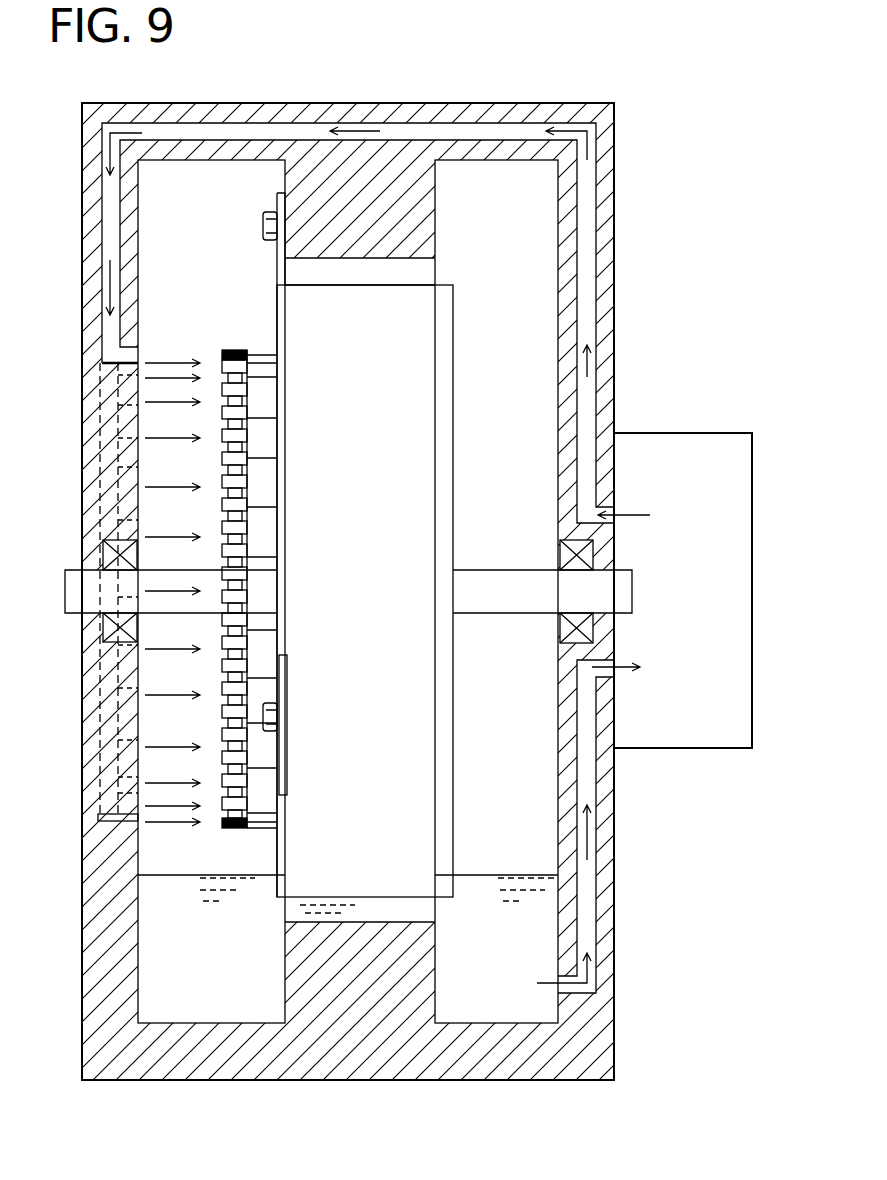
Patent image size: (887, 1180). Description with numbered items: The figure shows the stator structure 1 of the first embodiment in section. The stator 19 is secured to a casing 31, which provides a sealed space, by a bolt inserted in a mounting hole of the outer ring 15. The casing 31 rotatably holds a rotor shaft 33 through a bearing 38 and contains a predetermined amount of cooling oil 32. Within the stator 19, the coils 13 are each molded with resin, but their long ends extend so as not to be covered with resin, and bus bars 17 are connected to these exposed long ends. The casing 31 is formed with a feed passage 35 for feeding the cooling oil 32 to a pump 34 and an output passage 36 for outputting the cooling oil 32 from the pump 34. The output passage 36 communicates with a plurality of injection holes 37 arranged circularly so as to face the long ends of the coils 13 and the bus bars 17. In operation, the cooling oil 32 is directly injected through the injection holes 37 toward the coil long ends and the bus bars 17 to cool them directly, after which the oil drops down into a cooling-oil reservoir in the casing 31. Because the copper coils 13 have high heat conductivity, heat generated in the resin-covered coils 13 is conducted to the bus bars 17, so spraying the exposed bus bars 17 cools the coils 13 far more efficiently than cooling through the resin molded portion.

The stator structure 1 is at (627, 76).
The coil 13 is at (226, 356).
The outer ring 15 is at (430, 332).
The bus bar 17 is at (223, 413).
The stator 19 is at (472, 241).
The casing 31 is at (88, 990).
The cooling oil 32 is at (160, 922).
The rotor shaft 33 is at (75, 614).
The pump 34 is at (730, 697).
The feed passage 35 is at (588, 882).
The output passage 36 is at (590, 296).
The injection hole 37 is at (120, 351).
The bearing 38 is at (100, 548).